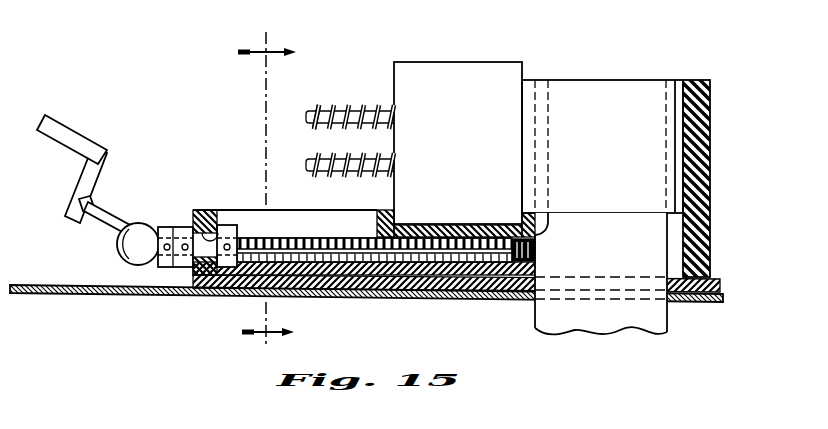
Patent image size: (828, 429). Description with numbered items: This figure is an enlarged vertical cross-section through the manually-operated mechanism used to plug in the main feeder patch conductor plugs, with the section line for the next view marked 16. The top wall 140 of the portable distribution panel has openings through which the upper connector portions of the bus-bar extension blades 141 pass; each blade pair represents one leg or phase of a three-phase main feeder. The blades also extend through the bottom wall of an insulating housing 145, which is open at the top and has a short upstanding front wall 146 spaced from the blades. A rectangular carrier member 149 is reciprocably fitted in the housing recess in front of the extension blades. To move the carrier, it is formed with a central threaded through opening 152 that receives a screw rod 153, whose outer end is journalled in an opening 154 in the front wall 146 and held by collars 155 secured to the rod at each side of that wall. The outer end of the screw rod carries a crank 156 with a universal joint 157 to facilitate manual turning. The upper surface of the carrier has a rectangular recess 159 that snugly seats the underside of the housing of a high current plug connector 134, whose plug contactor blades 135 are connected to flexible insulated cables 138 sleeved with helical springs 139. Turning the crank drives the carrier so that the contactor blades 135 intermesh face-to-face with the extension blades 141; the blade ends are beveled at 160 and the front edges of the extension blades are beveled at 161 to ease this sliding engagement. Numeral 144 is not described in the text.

The high current connector 134 is at (493, 62).
The plug contactor bars or blades 135 is at (623, 159).
The flexible insulated cables 138 is at (306, 163).
The helical springs 139 is at (332, 128).
The top wall 140 is at (108, 284).
The bus-bar extension portion or blade 141 is at (618, 250).
The base 144 is at (395, 297).
The insulating housing 145 is at (712, 150).
The front wall 146 is at (203, 210).
The carrier member 149 is at (388, 210).
The through opening 152 is at (526, 257).
The screw rod 153 is at (348, 236).
The opening 154 is at (219, 233).
The collar 155 is at (182, 227).
The crank 156 is at (105, 161).
The universal joint 157 is at (143, 222).
The rectangular recess 159 is at (397, 217).
The bevel 160 is at (679, 88).
The bevel 161 is at (536, 89).
The section line 16- 16 is at (238, 189).